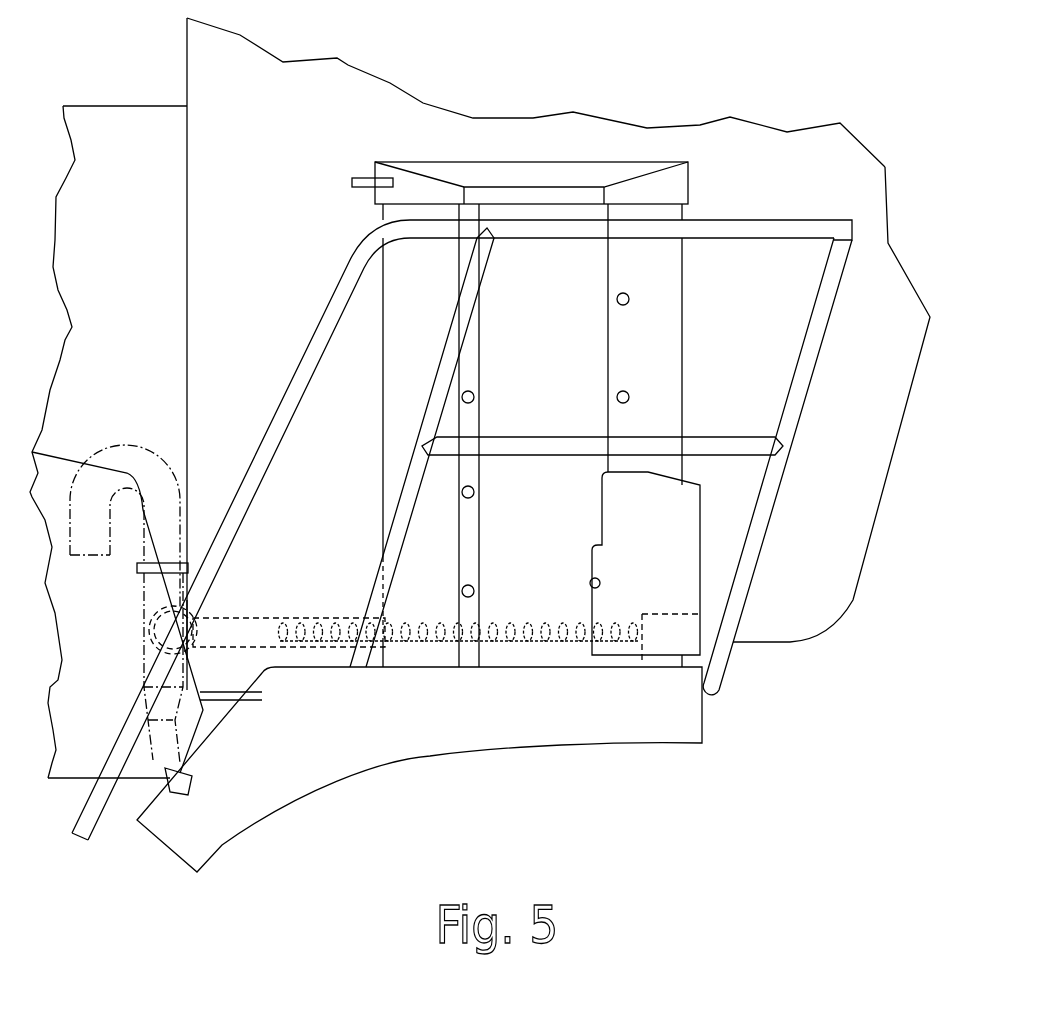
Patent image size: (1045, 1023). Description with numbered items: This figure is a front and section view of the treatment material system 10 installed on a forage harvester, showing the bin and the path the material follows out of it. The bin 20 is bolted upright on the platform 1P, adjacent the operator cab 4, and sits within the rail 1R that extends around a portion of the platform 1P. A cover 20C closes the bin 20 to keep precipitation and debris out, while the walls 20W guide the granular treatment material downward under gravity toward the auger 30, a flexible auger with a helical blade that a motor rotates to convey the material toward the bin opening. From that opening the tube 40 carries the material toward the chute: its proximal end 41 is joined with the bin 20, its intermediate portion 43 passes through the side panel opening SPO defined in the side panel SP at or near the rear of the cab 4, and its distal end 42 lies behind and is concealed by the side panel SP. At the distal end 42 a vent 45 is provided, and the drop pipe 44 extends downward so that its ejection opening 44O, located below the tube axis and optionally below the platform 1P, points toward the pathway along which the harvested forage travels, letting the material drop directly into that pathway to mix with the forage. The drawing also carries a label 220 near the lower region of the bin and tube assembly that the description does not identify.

The system 10 is at (511, 98).
The operator cab 4 is at (888, 457).
The side panel SP is at (92, 371).
The bin 20 is at (657, 151).
The cover 20C is at (688, 172).
The walls 20W is at (681, 297).
The tube 40 is at (261, 664).
The rail 1R is at (758, 558).
The proximal end 41 is at (365, 622).
The platform 1P is at (678, 717).
The auger 30 is at (537, 660).
The coil spring 220 is at (377, 655).
The intermediate portion 43 is at (288, 618).
The distal end 42 is at (212, 613).
The side panel opening SPO is at (185, 617).
The vent 45 is at (147, 472).
The drop pipe 44 is at (153, 757).
The ejection opening 44O is at (185, 790).